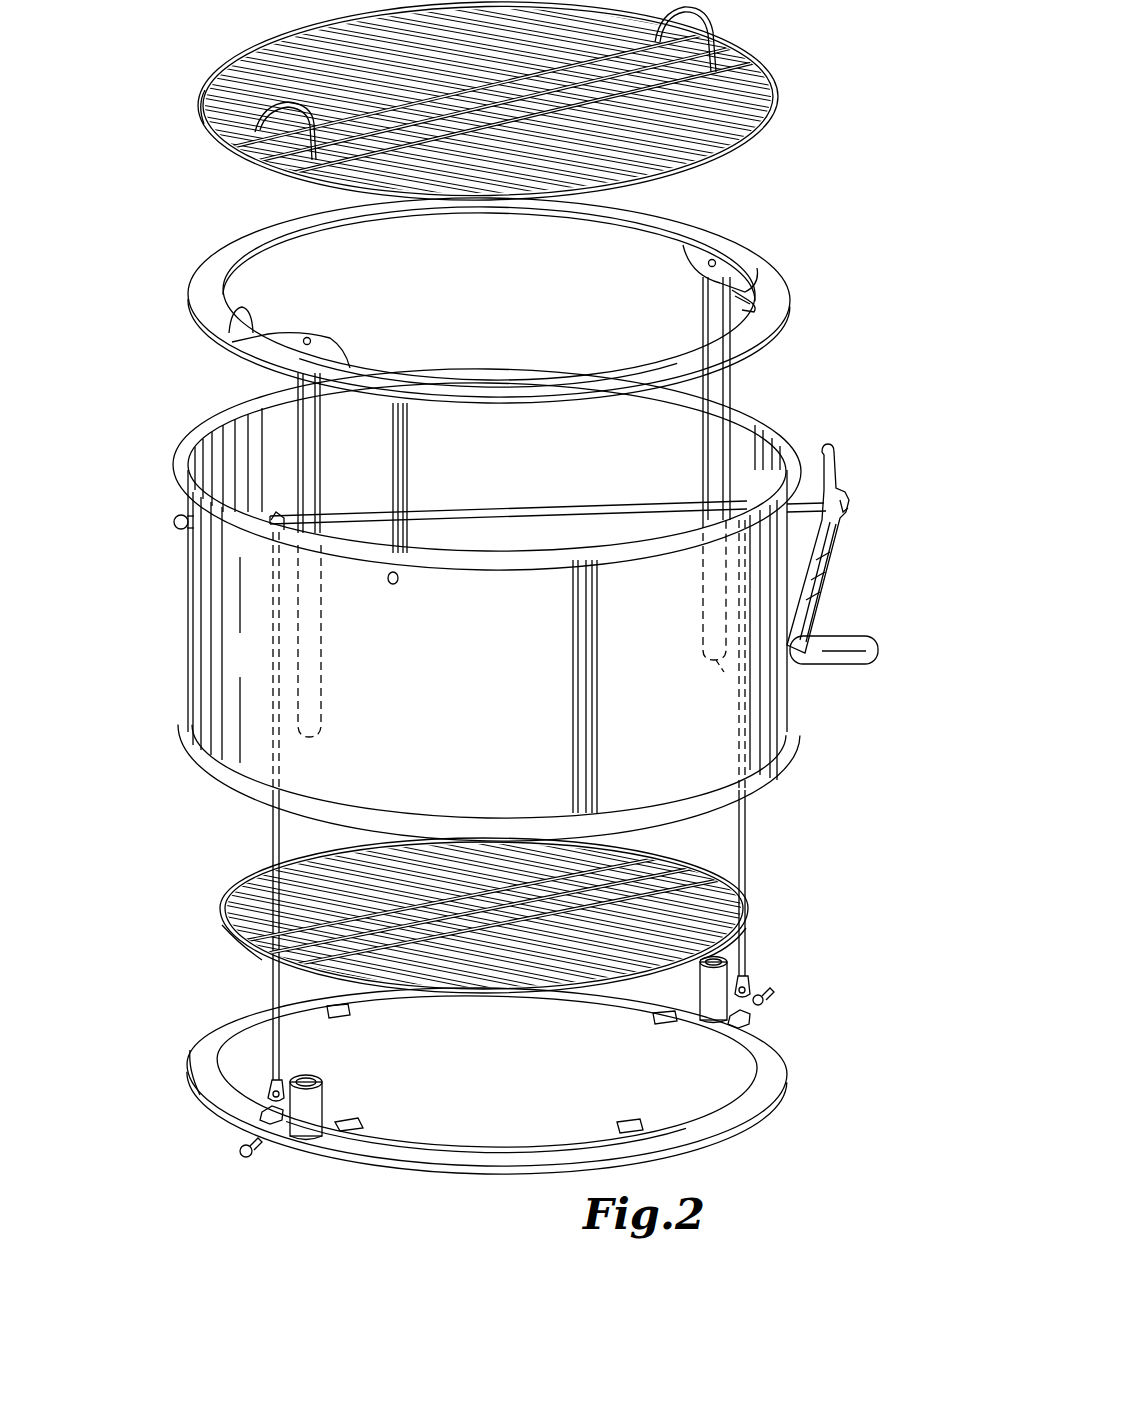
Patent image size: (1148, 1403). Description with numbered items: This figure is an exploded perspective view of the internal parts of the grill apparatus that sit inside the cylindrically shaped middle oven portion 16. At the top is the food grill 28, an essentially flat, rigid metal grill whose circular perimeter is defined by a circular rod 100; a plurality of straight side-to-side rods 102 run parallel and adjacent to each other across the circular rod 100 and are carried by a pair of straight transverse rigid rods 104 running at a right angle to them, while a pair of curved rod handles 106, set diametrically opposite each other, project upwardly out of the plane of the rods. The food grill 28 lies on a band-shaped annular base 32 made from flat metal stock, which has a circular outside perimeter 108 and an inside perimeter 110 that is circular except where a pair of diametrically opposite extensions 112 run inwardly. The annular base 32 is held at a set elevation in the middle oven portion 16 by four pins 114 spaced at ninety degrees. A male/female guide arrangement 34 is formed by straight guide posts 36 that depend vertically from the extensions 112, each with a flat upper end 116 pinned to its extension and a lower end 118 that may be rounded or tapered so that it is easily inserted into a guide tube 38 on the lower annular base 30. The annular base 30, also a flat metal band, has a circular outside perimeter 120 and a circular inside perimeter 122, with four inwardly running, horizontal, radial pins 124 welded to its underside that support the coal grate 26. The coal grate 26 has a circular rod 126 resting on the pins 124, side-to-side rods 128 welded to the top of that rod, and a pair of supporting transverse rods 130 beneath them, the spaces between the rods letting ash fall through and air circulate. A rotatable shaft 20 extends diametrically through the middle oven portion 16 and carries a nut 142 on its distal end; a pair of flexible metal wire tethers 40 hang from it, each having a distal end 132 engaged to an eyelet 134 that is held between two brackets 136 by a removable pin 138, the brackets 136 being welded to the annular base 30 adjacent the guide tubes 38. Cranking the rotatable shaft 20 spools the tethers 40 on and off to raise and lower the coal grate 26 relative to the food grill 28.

The middle oven portion 16 is at (190, 585).
The rotatable shaft 20 is at (668, 500).
The coal grate 26 is at (222, 906).
The food grill 28 is at (780, 99).
The annular base 30 is at (768, 1096).
The annular base 32 is at (766, 250).
The male/female guide arrangement 34 is at (745, 376).
The guide posts 36 is at (742, 430).
The guide tubes 38 is at (297, 1142).
The flexible tethers 40 is at (273, 836).
The circular rod 100 is at (757, 66).
The straight side-to-side rods 102 is at (200, 113).
The straight transverse rigid rods 104 is at (318, 166).
The handles 106 is at (720, 23).
The outside perimeter 108 is at (232, 312).
The inside perimeter 110 is at (245, 341).
The extensions 112 is at (717, 254).
The pins 114 is at (388, 580).
The upper end 116 is at (768, 304).
The lower end 118 is at (762, 662).
The outside perimeter 120 is at (189, 1056).
The inside perimeter 122 is at (722, 1126).
The pins 124 is at (752, 1058).
The circular rod 126 is at (236, 946).
The side-to-side rods 128 is at (250, 900).
The supporting transverse rods 130 is at (746, 929).
The distal end 132 is at (268, 1090).
The eyelet 134 is at (262, 1118).
The brackets 136 is at (243, 1150).
The pin 138 is at (768, 990).
The nut 142 is at (183, 514).